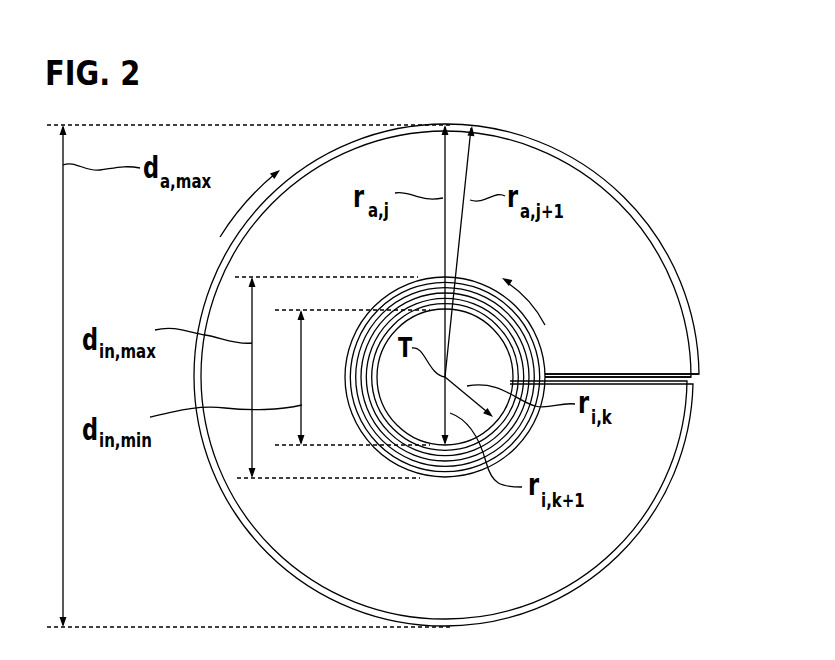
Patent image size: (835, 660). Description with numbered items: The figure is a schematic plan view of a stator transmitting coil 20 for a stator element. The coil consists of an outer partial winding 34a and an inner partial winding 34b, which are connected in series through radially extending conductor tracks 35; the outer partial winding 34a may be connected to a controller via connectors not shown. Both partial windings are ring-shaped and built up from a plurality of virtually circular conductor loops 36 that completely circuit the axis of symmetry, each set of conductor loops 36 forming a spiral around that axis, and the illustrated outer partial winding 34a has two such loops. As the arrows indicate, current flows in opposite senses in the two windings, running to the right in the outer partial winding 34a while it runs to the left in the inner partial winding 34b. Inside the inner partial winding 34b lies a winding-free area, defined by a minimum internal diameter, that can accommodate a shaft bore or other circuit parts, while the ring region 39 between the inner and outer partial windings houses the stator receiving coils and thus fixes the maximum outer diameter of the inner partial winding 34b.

The stator transmitting coil 20 is at (496, 348).
The outer partial winding 34a is at (563, 150).
The inner partial winding 34b is at (523, 440).
The radially extending conductor tracks 35 is at (640, 365).
The conductor loops 36 is at (543, 347).
The ring region 39 is at (646, 270).